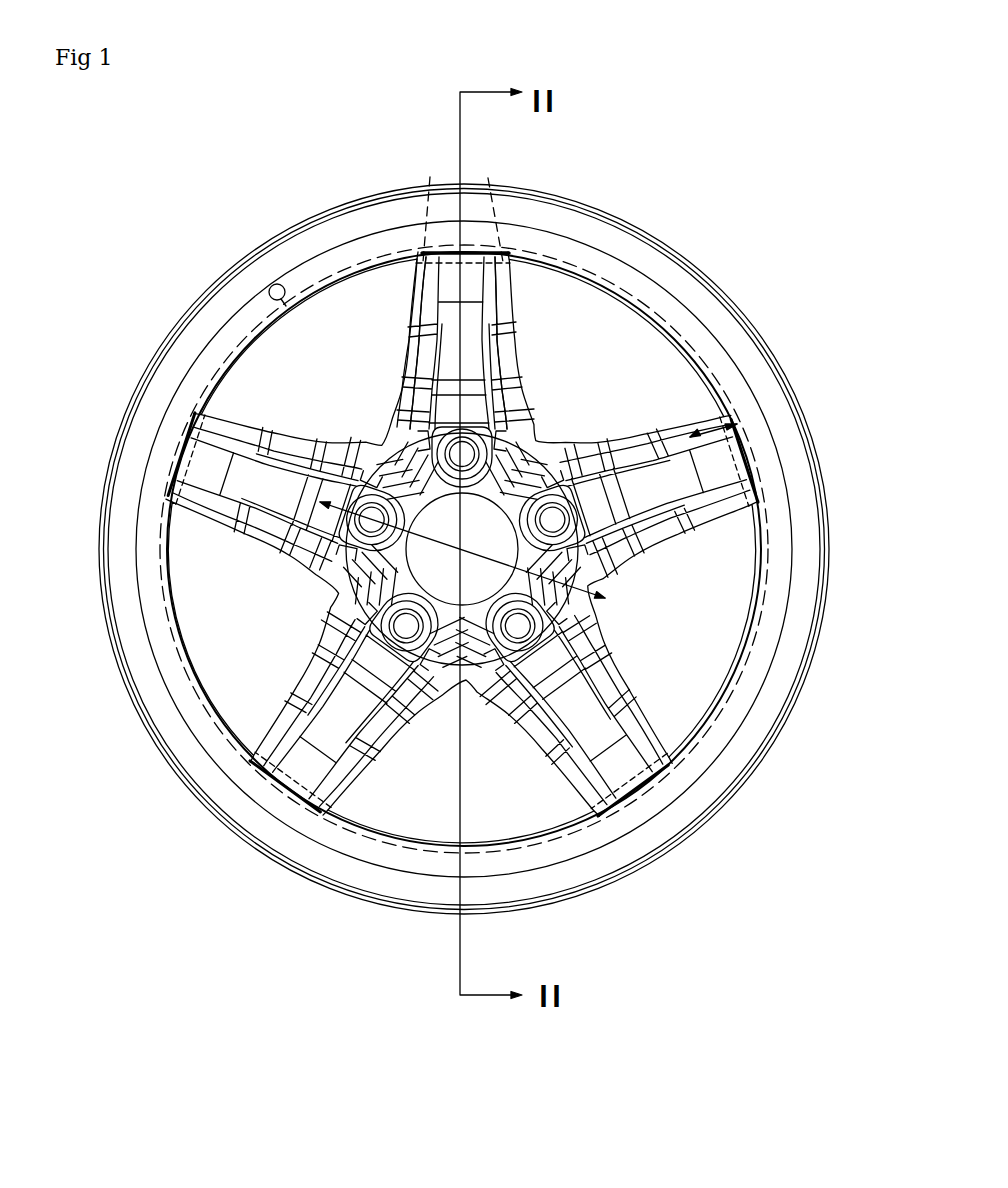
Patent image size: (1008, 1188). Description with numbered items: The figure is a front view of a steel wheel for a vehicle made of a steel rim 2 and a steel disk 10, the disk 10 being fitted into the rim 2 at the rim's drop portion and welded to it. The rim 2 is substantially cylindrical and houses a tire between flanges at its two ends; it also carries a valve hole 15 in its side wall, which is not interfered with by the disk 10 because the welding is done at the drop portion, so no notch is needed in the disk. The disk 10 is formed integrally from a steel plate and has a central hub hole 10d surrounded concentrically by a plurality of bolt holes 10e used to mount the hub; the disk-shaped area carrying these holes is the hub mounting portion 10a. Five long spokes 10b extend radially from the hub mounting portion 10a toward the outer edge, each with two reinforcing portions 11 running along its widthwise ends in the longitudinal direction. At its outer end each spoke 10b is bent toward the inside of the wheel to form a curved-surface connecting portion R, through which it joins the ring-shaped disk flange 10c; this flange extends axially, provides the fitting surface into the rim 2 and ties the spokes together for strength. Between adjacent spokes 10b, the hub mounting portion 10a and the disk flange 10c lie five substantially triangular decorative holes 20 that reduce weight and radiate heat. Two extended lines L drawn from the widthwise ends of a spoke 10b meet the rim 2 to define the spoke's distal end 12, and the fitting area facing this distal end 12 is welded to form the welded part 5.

The rim 2 is at (758, 357).
The welded part 5 is at (472, 257).
The disk 10 is at (759, 673).
The hub mounting portion 10a is at (470, 552).
The spoke 10b is at (531, 336).
The disk flange 10c is at (758, 582).
The hub hole 10d is at (398, 557).
The bolt hole 10e is at (407, 627).
The reinforcing portion 11 is at (420, 347).
The distal end 12 is at (418, 288).
The valve hole 15 is at (272, 283).
The decorative hole 20 is at (263, 370).
The extended line L is at (459, 202).
The curved-surface connecting portion R is at (710, 431).